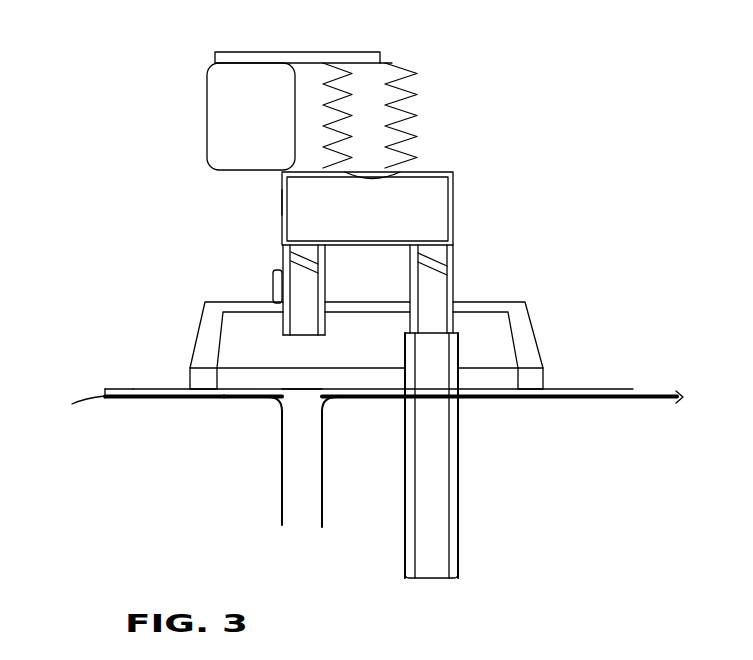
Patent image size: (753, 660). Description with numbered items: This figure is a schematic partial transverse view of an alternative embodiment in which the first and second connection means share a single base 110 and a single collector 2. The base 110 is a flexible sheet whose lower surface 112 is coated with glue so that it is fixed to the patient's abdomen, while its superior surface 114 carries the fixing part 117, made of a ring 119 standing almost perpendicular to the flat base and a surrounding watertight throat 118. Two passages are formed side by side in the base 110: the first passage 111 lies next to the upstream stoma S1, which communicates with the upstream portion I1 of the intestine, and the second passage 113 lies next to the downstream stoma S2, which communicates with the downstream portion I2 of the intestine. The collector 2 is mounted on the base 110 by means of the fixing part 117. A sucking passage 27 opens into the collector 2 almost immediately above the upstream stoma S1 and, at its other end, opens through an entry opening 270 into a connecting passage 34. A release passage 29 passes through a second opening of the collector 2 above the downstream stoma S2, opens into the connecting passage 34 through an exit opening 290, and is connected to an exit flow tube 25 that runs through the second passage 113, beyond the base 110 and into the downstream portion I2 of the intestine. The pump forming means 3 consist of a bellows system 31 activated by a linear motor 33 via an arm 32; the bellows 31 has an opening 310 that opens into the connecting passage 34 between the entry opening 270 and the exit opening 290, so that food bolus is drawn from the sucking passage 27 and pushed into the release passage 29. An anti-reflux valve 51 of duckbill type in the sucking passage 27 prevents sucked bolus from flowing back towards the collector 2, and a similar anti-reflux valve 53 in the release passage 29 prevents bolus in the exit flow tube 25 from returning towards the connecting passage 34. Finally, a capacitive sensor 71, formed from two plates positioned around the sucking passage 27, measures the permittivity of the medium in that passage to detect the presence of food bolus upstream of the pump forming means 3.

The collector 2 is at (527, 332).
The pump forming means 3 is at (203, 108).
The exit flow tube 25 is at (472, 343).
The sucking passage 27 is at (302, 260).
The release passage 29 is at (450, 289).
The bellows system 31 is at (382, 120).
The arm 32 is at (353, 48).
The motor 33 is at (274, 125).
The connecting passage 34 is at (367, 208).
The anti-reflux valve 51 is at (301, 273).
The anti-reflux valve 53 is at (433, 259).
The capacitive sensor 71 is at (272, 286).
The base 110 is at (615, 400).
The first passage 111 is at (318, 405).
The lower surface 112 is at (130, 395).
The second passage 113 is at (402, 402).
The superior surface 114 is at (132, 390).
The fixing part 117 is at (533, 376).
The watertight throat 118 is at (223, 395).
The ring 119 is at (207, 368).
The entry opening 270 is at (332, 205).
The exit opening 290 is at (455, 230).
The opening 310 is at (392, 172).
The upstream portion of the intestine I1 is at (277, 465).
The downstream portion of the intestine I2 is at (467, 510).
The upstream stoma S1 is at (310, 488).
The downstream stoma S2 is at (455, 403).